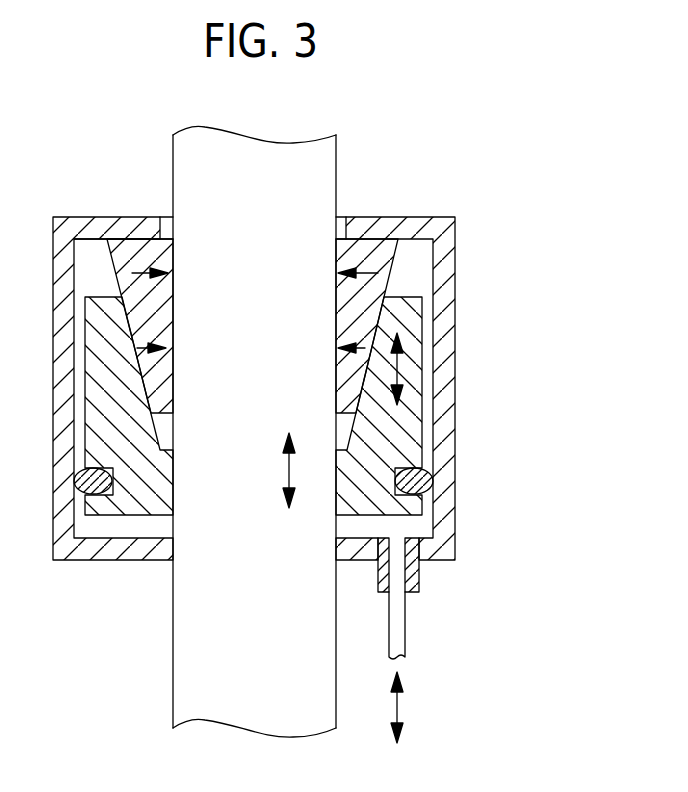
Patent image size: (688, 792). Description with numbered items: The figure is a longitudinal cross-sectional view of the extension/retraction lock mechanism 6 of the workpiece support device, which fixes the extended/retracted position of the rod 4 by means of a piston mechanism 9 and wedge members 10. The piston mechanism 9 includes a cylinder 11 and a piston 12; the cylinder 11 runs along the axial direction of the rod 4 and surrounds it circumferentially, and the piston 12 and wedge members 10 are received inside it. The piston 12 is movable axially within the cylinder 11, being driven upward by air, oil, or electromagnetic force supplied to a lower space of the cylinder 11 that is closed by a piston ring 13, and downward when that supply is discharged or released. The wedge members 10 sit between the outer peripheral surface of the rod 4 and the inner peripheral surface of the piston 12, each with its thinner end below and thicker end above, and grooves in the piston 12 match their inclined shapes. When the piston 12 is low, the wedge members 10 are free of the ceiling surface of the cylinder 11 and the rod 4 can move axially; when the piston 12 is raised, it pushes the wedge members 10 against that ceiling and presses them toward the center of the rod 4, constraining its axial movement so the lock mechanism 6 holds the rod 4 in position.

The rod 4 is at (323, 156).
The extension/retraction lock mechanism 6 is at (308, 441).
The piston mechanism 9 is at (303, 451).
The wedge member 10 is at (130, 248).
The cylinder 11 is at (448, 415).
The piston 12 is at (412, 325).
The piston ring 13 is at (420, 479).